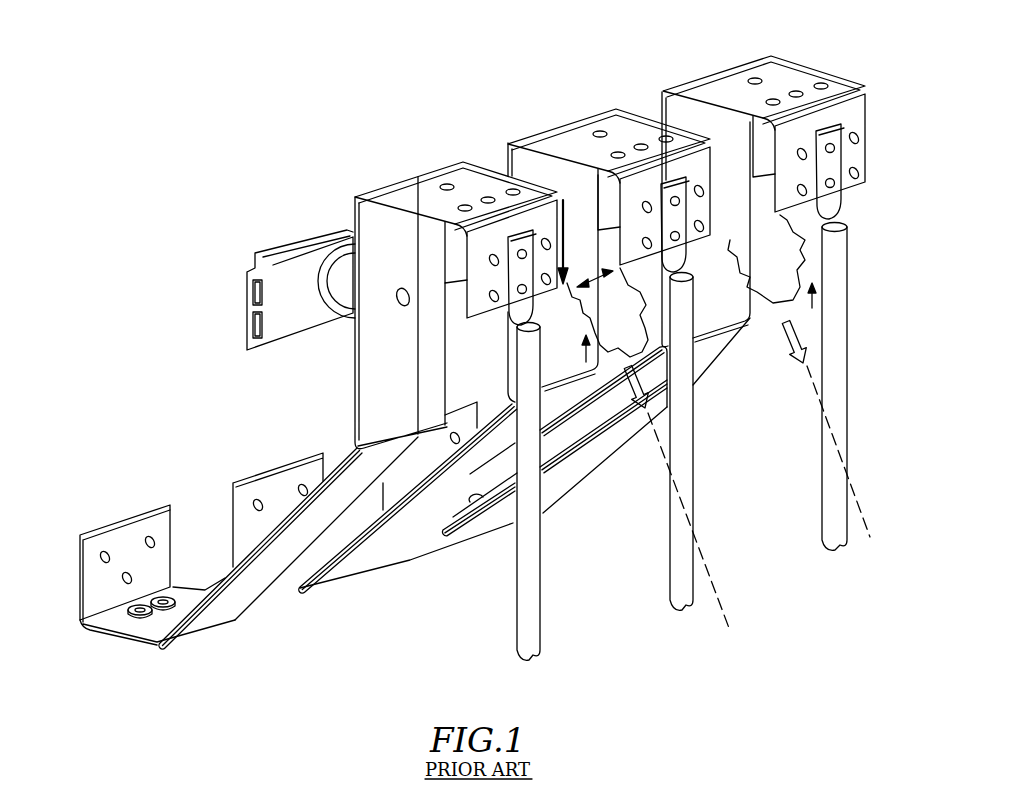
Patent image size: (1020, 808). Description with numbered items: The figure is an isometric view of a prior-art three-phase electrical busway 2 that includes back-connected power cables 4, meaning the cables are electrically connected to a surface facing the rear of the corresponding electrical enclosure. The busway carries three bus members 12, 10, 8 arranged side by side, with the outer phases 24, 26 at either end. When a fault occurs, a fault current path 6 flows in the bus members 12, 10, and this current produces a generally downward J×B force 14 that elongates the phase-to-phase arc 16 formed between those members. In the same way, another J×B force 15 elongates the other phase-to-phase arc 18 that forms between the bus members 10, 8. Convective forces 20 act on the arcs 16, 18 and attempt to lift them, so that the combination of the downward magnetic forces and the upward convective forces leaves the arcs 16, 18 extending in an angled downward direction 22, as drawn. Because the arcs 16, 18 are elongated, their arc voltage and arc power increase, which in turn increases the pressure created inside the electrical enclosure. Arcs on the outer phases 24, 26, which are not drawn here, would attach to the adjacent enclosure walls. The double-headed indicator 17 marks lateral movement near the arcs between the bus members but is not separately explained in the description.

The three-phase electrical busway 2 is at (402, 600).
The power cables 4 is at (541, 616).
The fault current path 6 is at (585, 158).
The bus member 8 is at (578, 483).
The bus member 10 is at (348, 577).
The bus member 12 is at (206, 623).
The J×B force 14 is at (643, 401).
The J×B force 15 is at (790, 341).
The phase-to-phase arc 16 is at (648, 310).
The lateral movement arrow 17 is at (593, 276).
The phase-to-phase arc 18 is at (812, 267).
The convective forces 20 is at (812, 308).
The angled downward direction 22 is at (826, 443).
The outer phase 24 is at (392, 168).
The outer phase 26 is at (700, 60).